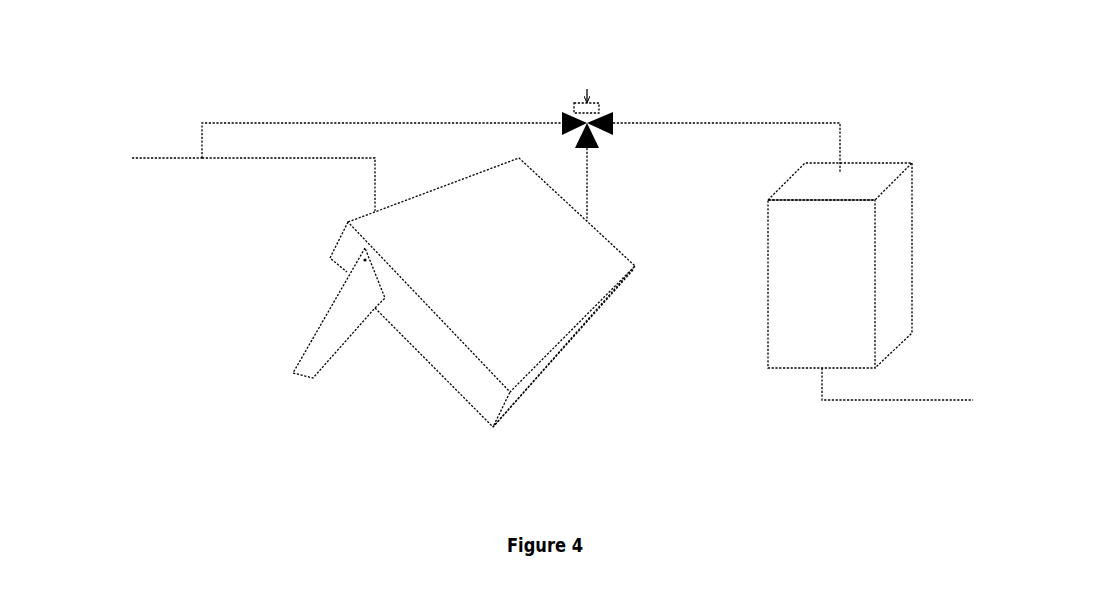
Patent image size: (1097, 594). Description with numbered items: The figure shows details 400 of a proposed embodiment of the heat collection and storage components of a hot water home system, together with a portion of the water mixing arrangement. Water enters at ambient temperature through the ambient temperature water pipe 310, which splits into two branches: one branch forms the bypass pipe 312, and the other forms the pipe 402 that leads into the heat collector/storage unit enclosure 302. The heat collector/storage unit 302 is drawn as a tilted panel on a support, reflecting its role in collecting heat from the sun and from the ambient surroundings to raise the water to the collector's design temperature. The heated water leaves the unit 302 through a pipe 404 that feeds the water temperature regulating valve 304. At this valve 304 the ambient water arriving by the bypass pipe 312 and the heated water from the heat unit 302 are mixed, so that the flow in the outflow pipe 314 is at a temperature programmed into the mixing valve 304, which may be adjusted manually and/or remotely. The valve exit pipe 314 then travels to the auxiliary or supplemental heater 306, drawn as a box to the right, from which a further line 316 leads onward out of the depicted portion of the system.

The details of the heat collection and storage components 400 is at (797, 90).
The ambient temperature water pipe 310 is at (165, 158).
The bypass pipe 312 is at (242, 115).
The pipe going into the heat collector/storage unit enclosure 402 is at (307, 155).
The outflow pipe 314 is at (752, 123).
The pipe 404 is at (593, 198).
The water temperature regulating valve 304 is at (587, 105).
The auxiliary or supplemental heater 306 is at (900, 213).
The outlet line 316 is at (908, 390).
The heat collector/storage unit enclosure 302 is at (473, 375).